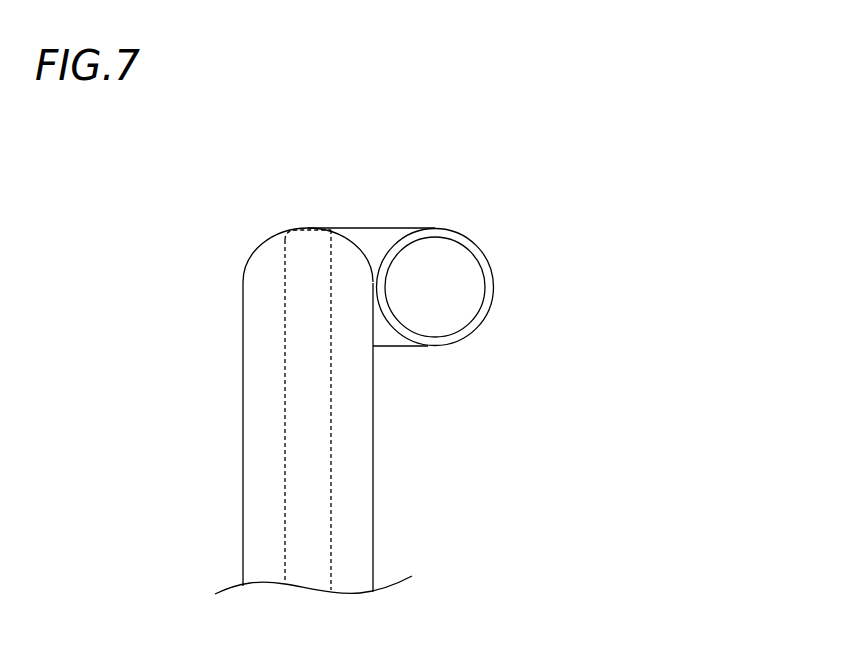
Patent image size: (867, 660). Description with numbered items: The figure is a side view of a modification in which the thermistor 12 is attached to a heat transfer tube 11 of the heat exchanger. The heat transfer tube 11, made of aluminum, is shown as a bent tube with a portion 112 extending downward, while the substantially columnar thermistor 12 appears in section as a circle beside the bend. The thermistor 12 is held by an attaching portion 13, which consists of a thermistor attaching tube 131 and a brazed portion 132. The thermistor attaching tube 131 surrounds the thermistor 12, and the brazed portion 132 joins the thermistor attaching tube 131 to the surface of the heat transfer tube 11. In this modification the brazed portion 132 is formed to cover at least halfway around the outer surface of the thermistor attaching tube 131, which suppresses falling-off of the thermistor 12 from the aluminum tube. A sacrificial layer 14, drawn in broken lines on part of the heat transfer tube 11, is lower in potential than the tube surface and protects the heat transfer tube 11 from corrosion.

The heat transfer tube 11 is at (226, 480).
The tube wall portion 112 is at (267, 337).
The thermistor 12 is at (452, 273).
The attaching portion 13 is at (485, 162).
The thermistor attaching tube 131 is at (436, 232).
The brazed portion 132 is at (373, 235).
The sacrificial layer 14 is at (297, 262).